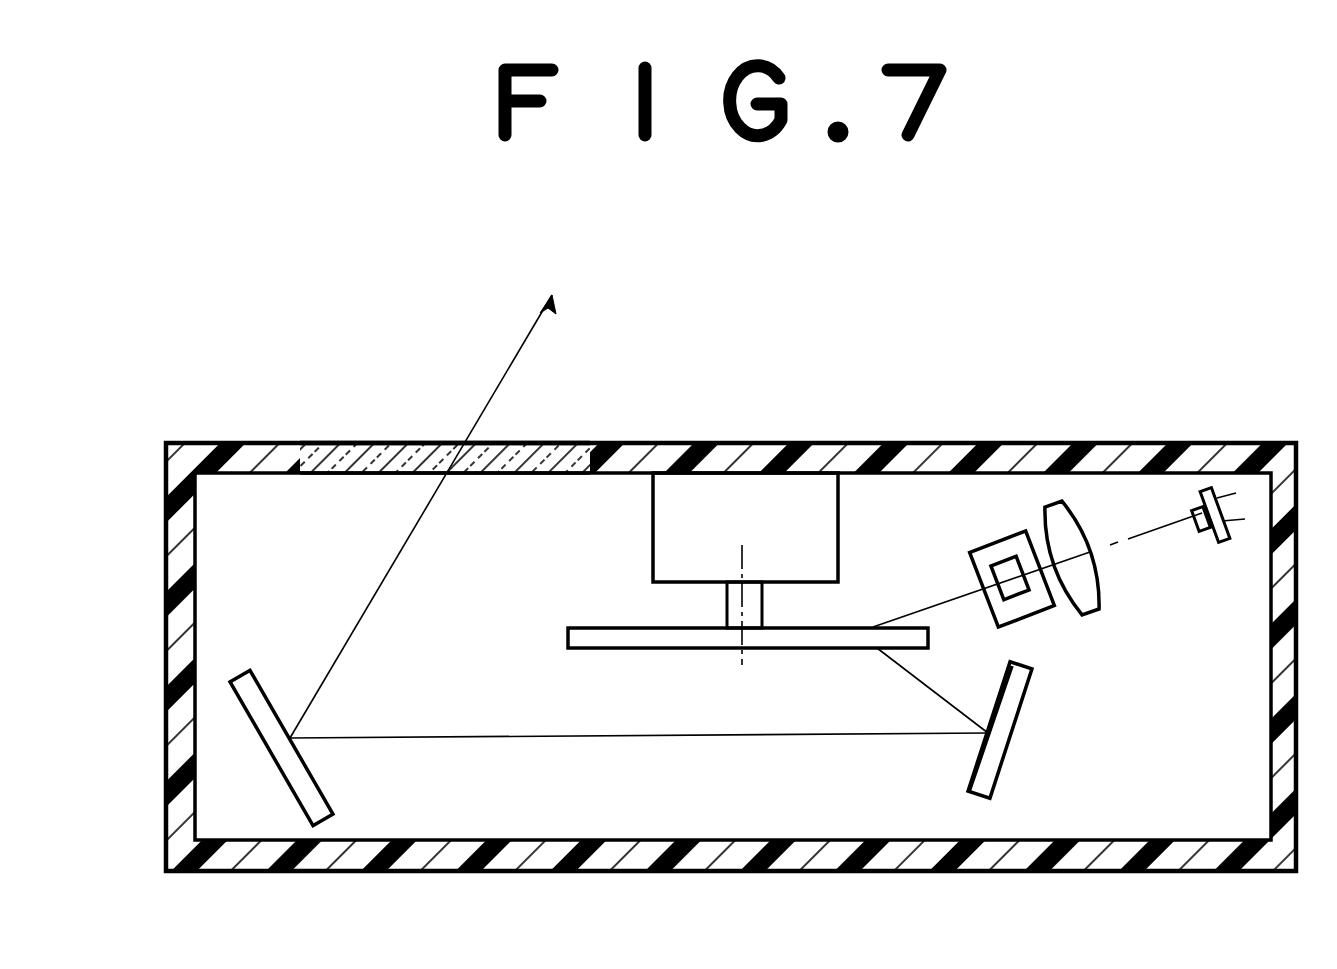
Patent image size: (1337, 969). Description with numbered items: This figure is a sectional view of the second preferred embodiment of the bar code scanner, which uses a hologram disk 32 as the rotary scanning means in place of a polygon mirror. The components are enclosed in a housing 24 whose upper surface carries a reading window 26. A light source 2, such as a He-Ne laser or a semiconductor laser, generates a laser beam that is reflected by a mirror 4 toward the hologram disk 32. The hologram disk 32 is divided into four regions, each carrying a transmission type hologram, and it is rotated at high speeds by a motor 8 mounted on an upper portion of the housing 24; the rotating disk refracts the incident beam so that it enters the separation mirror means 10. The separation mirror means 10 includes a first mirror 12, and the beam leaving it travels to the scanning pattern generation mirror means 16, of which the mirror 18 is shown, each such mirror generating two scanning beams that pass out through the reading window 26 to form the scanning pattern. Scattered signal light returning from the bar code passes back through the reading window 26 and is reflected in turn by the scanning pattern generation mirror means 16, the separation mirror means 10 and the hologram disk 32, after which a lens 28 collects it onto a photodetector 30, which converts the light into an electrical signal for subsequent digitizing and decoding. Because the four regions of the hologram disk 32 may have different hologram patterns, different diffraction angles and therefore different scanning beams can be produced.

The light source 2 is at (985, 548).
The mirror 4 is at (1018, 594).
The motor 8 is at (653, 533).
The separation mirror means 10 is at (995, 780).
The first mirror 12 is at (1017, 720).
The scanning pattern generation mirror means 16 is at (262, 747).
The mirror 18 is at (293, 795).
The housing 24 is at (829, 443).
The reading window 26 is at (332, 443).
The lens 28 is at (1100, 590).
The photodetector 30 is at (1197, 498).
The hologram disk 32 is at (568, 640).